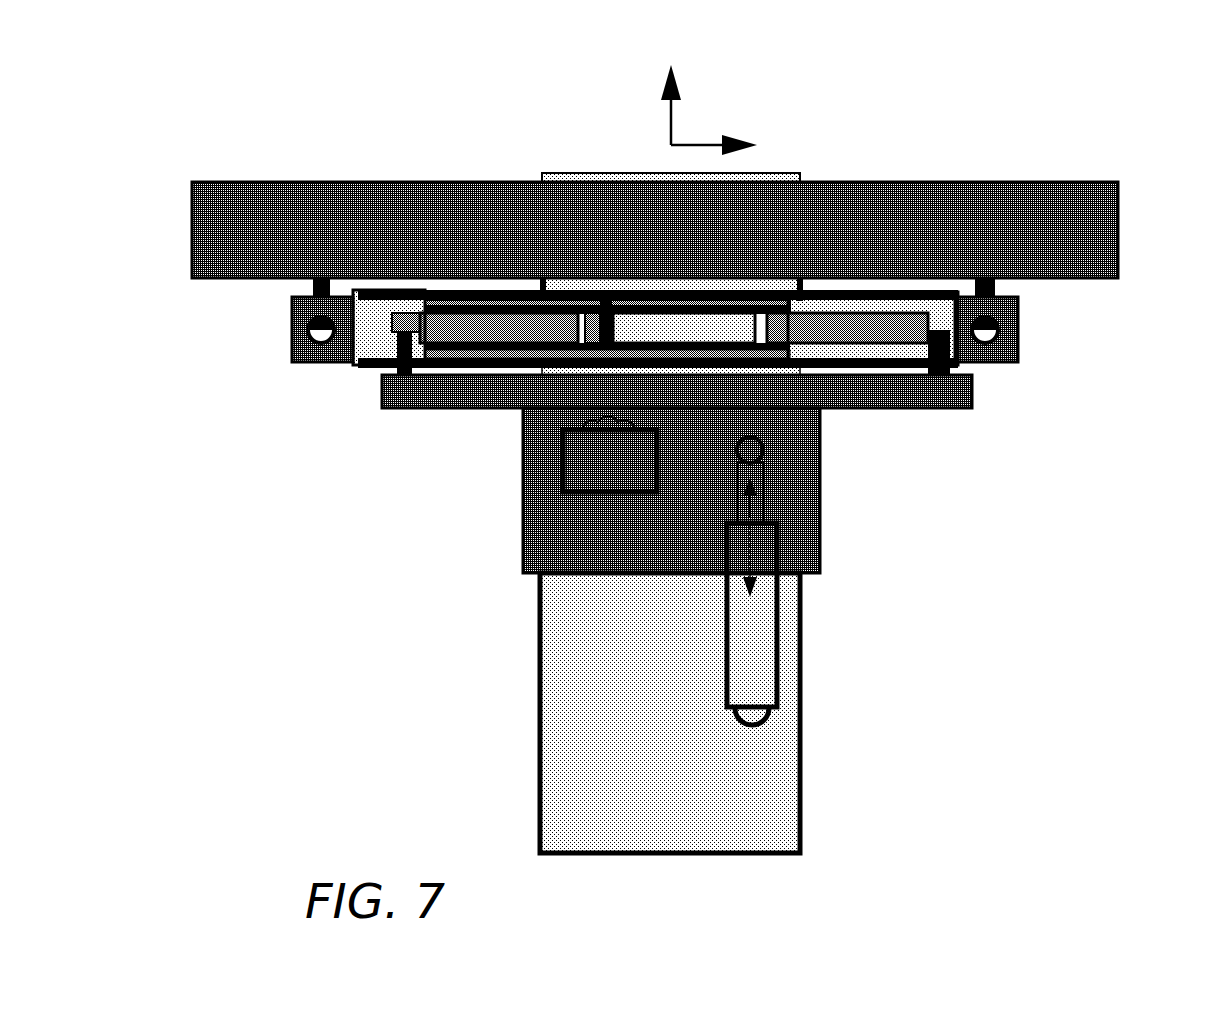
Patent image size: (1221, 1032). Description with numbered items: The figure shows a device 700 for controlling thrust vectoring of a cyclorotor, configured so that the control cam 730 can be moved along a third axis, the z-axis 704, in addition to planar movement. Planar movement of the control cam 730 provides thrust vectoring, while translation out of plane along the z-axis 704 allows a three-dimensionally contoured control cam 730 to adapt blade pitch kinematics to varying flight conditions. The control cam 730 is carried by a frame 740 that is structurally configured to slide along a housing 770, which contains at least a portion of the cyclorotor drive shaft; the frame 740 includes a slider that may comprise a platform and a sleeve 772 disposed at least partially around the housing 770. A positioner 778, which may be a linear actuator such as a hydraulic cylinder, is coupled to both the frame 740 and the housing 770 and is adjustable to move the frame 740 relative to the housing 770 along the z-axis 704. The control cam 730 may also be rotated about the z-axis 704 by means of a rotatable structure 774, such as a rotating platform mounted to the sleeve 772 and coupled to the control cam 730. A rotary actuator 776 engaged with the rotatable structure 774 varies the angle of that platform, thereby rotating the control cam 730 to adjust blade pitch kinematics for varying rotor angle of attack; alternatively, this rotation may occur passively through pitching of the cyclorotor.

The device 700 is at (1158, 122).
The z-axis 704 is at (666, 120).
The control cam 730 is at (1118, 240).
The frame 740 is at (360, 368).
The housing 770 is at (800, 800).
The sleeve 772 is at (821, 475).
The rotatable structure 774 is at (972, 410).
The rotary actuator 776 is at (572, 468).
The positioner 778 is at (771, 630).